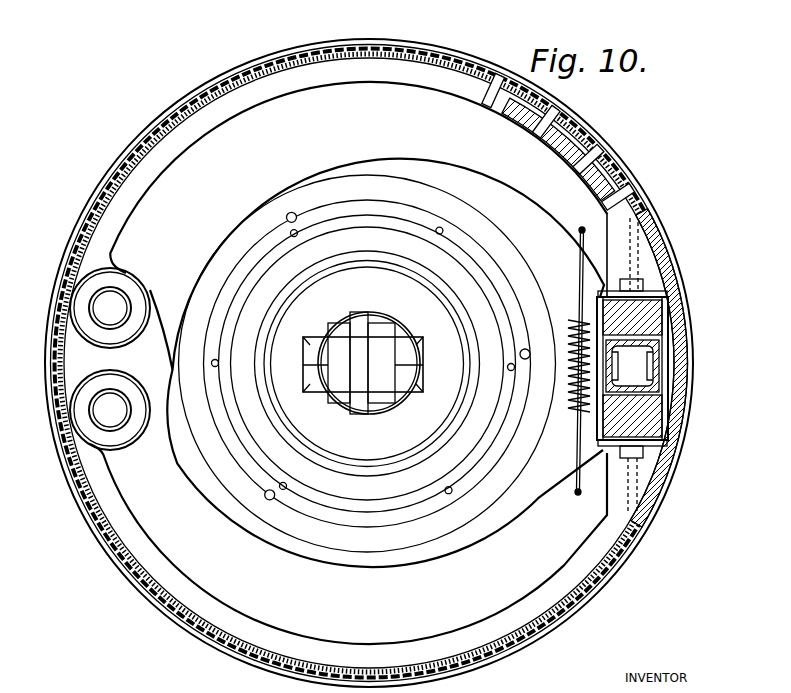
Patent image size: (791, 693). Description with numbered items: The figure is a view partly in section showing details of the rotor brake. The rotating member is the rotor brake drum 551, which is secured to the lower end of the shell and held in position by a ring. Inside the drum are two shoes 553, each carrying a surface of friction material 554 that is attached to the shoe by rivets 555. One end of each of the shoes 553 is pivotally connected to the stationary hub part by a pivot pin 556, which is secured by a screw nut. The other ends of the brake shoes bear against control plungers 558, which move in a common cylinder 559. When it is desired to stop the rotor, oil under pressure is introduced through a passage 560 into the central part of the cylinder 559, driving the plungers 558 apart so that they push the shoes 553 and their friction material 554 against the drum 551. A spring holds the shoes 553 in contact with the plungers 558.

The rotor brake drum 551 is at (221, 84).
The brake shoes 553 is at (180, 143).
The friction material surfaces 554 is at (392, 57).
The rivets 555 is at (617, 197).
The pivot pin 556 is at (111, 408).
The control plungers 558 is at (633, 312).
The cylinder 559 is at (636, 368).
The passage 560 is at (650, 373).